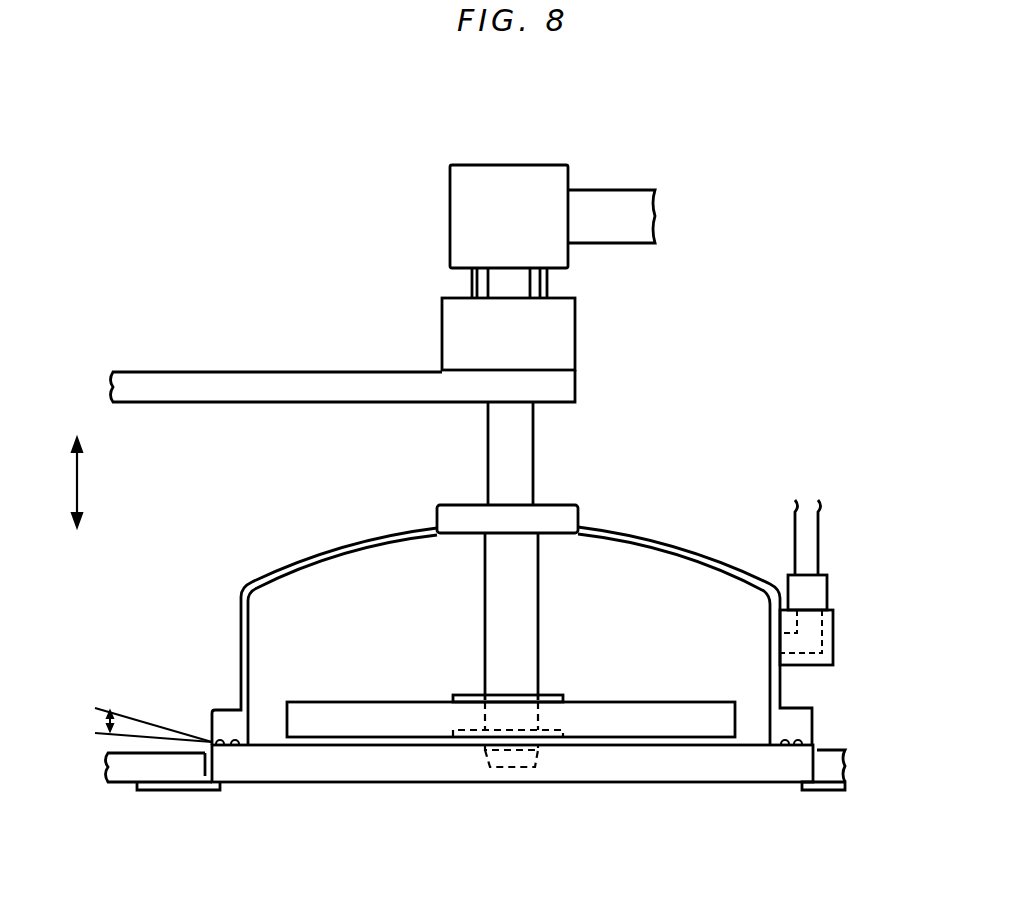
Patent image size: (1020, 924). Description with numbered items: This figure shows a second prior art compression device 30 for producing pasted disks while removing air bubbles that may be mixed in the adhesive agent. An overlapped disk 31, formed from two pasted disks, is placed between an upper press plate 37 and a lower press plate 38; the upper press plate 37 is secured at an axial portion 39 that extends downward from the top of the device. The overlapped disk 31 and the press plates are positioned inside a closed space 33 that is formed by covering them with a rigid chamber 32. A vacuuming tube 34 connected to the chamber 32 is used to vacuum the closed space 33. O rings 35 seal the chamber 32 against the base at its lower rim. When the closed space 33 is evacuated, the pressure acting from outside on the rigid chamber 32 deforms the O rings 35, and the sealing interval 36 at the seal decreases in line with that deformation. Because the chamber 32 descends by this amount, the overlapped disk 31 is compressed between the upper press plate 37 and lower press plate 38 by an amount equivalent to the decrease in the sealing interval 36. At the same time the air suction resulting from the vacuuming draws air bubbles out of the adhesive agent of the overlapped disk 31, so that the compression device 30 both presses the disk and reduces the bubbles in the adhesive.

The compression device 30 is at (663, 442).
The overlapped disk 31 is at (660, 748).
The chamber 32 is at (345, 545).
The closed space 33 is at (403, 636).
The vacuuming tube 34 is at (810, 597).
The O rings 35 is at (218, 738).
The sealing interval 36 is at (105, 717).
The upper press plate 37 is at (608, 717).
The lower press plate 38 is at (370, 760).
The axial portion 39 is at (517, 632).